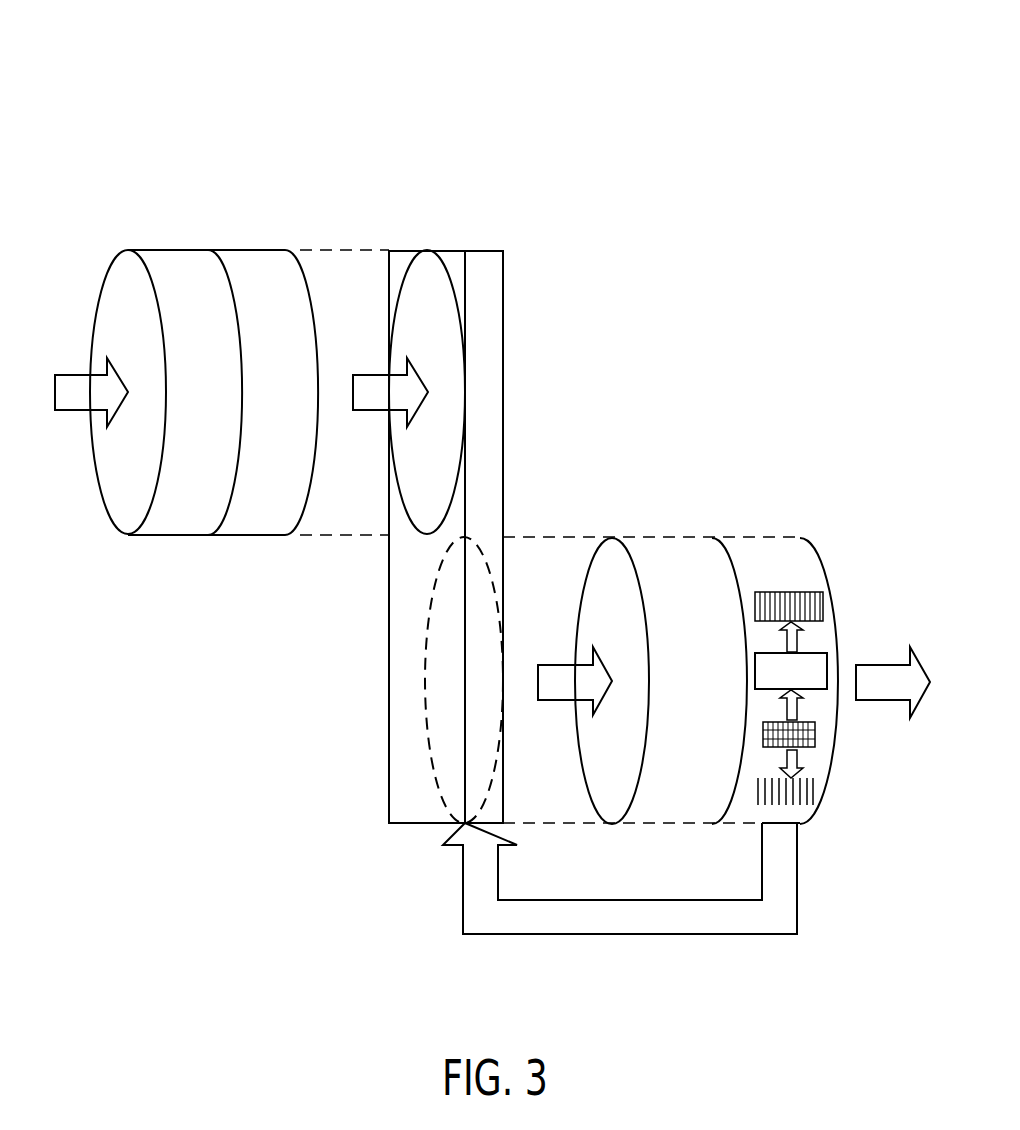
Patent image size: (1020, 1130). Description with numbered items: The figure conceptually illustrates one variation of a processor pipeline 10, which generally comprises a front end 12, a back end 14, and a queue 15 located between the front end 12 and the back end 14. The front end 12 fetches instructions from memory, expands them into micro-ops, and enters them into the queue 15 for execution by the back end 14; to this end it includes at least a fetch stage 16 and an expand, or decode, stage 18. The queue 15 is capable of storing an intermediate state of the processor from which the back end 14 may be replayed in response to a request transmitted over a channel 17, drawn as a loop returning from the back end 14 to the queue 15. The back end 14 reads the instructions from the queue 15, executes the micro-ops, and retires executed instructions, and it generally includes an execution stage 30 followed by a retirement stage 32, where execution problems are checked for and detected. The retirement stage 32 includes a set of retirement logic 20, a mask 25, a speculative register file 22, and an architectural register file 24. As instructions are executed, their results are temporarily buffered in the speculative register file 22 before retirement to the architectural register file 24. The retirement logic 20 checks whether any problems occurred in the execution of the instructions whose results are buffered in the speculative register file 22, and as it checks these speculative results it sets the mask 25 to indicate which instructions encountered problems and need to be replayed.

The processor pipeline 10 is at (412, 40).
The front end 12 is at (69, 170).
The back end 14 is at (582, 478).
The queue 15 is at (427, 251).
The fetch stage 16 is at (165, 250).
The channel 17 is at (665, 935).
The decode stage 18 is at (249, 250).
The retirement logic 20 is at (779, 684).
The speculative register file 22 is at (818, 733).
The architectural register file 24 is at (812, 788).
The mask 25 is at (808, 592).
The execution stage 30 is at (668, 537).
The retirement stage 32 is at (757, 537).